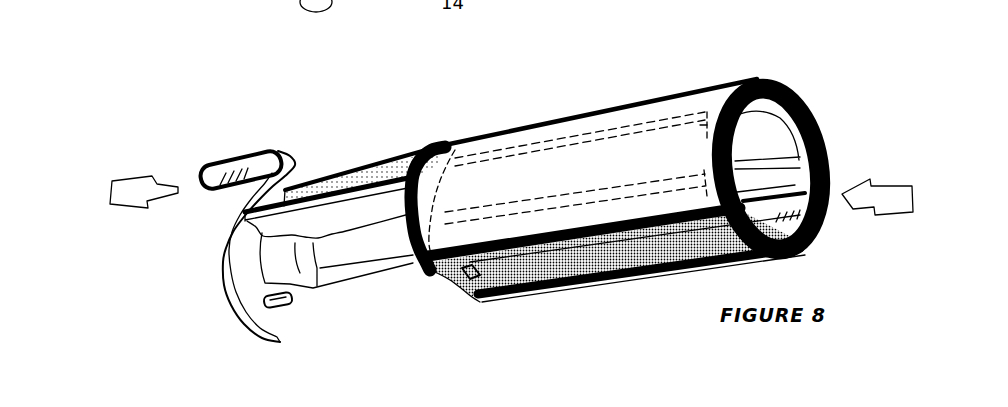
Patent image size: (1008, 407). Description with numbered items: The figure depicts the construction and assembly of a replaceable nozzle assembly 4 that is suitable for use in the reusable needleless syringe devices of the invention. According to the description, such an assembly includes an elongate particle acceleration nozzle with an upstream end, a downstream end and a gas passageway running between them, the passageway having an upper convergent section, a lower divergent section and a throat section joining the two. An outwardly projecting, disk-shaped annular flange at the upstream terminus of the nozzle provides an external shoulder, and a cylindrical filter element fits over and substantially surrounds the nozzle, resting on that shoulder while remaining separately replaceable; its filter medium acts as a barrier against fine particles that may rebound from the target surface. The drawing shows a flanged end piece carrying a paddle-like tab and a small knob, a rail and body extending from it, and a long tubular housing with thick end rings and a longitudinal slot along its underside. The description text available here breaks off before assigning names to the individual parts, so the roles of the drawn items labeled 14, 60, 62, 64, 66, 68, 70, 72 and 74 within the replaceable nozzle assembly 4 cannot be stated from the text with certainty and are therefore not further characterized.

The replaceable nozzle assembly 4 is at (176, 72).
The tubular housing 14 is at (600, 78).
The slide body 60 is at (357, 247).
The guide rail 62 is at (317, 216).
The end flange 64 is at (243, 257).
The detent knob 66 is at (280, 307).
The paddle tab 68 is at (228, 158).
The end ring 70 is at (786, 118).
The housing wall 72 is at (535, 138).
The longitudinal slot 74 is at (482, 307).